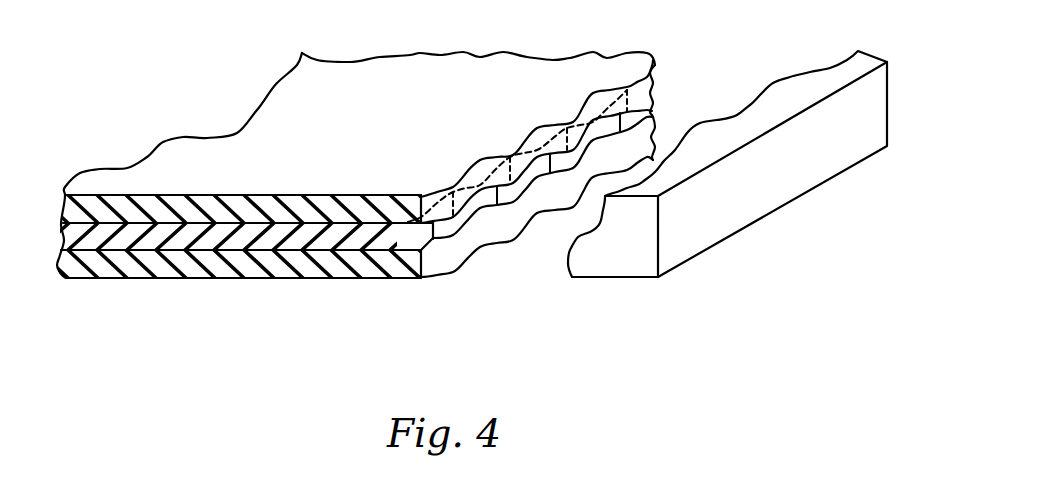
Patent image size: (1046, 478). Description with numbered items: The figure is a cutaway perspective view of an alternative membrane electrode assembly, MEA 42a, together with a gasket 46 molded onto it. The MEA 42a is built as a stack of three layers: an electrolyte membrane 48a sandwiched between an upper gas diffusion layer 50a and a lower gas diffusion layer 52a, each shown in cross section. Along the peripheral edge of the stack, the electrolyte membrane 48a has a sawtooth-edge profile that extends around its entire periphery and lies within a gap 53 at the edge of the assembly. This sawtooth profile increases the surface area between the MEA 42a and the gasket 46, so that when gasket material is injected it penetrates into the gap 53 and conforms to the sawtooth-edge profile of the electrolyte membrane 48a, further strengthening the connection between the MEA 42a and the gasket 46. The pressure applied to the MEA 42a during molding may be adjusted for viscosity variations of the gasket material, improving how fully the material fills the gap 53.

The MEA 42a is at (346, 220).
The gas diffusion layer 50a is at (103, 208).
The electrolyte membrane 48a is at (178, 238).
The gas diffusion layer 52a is at (255, 265).
The gap 53 is at (457, 222).
The gasket 46 is at (697, 233).